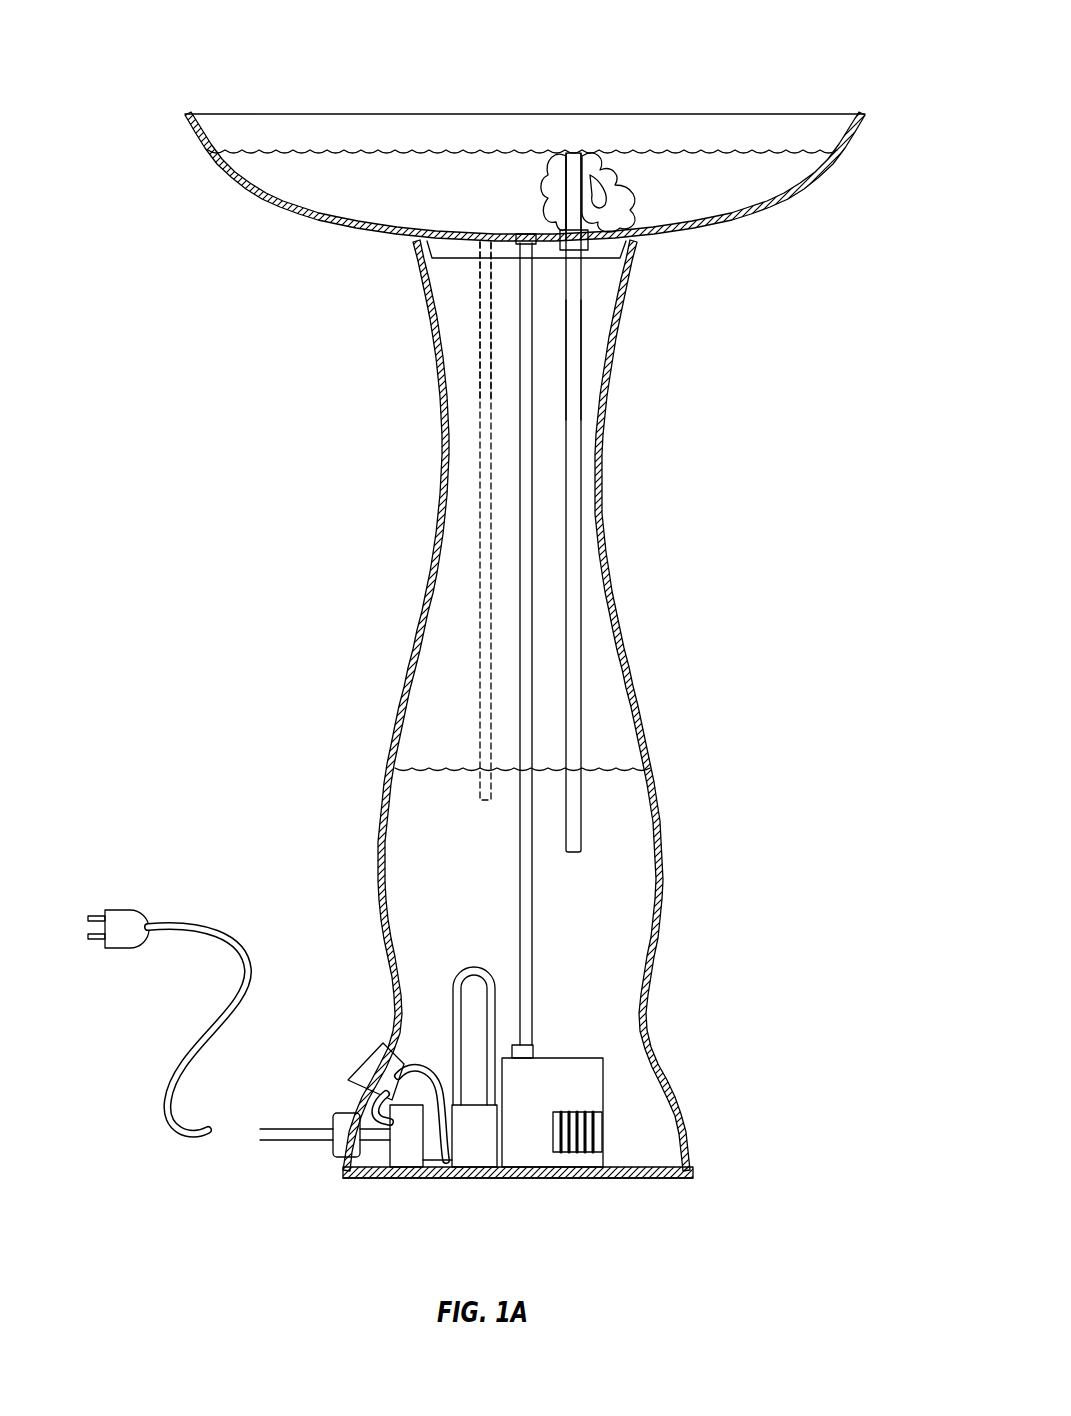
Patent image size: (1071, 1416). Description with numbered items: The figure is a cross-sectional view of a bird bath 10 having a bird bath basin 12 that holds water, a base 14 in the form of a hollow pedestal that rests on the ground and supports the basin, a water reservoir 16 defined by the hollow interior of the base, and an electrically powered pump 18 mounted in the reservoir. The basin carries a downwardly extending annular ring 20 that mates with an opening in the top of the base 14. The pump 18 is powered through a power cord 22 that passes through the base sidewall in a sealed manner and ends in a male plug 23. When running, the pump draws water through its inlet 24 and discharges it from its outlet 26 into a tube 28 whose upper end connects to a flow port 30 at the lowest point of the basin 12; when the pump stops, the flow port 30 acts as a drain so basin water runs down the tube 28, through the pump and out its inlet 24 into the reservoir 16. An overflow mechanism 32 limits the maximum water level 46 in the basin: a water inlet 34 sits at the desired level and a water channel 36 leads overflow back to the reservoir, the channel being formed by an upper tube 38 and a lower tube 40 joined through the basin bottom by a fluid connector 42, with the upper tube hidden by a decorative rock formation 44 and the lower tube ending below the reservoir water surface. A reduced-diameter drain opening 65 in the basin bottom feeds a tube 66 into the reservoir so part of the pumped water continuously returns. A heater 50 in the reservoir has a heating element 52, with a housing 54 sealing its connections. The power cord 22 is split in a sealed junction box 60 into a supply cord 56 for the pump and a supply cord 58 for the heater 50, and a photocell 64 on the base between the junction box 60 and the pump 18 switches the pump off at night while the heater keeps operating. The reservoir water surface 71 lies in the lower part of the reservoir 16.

The bird bath 10 is at (732, 44).
The bird bath basin 12 is at (262, 206).
The base 14 is at (440, 410).
The water reservoir 16 is at (600, 665).
The pump 18 is at (598, 1096).
The annular ring 20 is at (632, 254).
The power cord 22 is at (300, 1143).
The male plug 23 is at (118, 908).
The pump inlet 24 is at (590, 1140).
The pump outlet 26 is at (532, 1052).
The tube 28 is at (518, 875).
The flow port 30 is at (532, 236).
The overflow mechanism 32 is at (605, 225).
The water inlet 34 is at (573, 152).
The water channel 36 is at (583, 362).
The upper tube 38 is at (600, 158).
The lower tube 40 is at (580, 490).
The fluid connector 42 is at (612, 225).
The decorative rock formation 44 is at (645, 227).
The water level 46 is at (280, 148).
The heater 50 is at (487, 1113).
The heating element 52 is at (476, 966).
The housing 54 is at (478, 1176).
The supply cord 56 is at (488, 1152).
The supply cord 58 is at (432, 1170).
The junction box 60 is at (405, 1158).
The photocell 64 is at (370, 1060).
The drain opening 65 is at (483, 240).
The tube 66 is at (470, 530).
The reservoir water level 71 is at (618, 768).